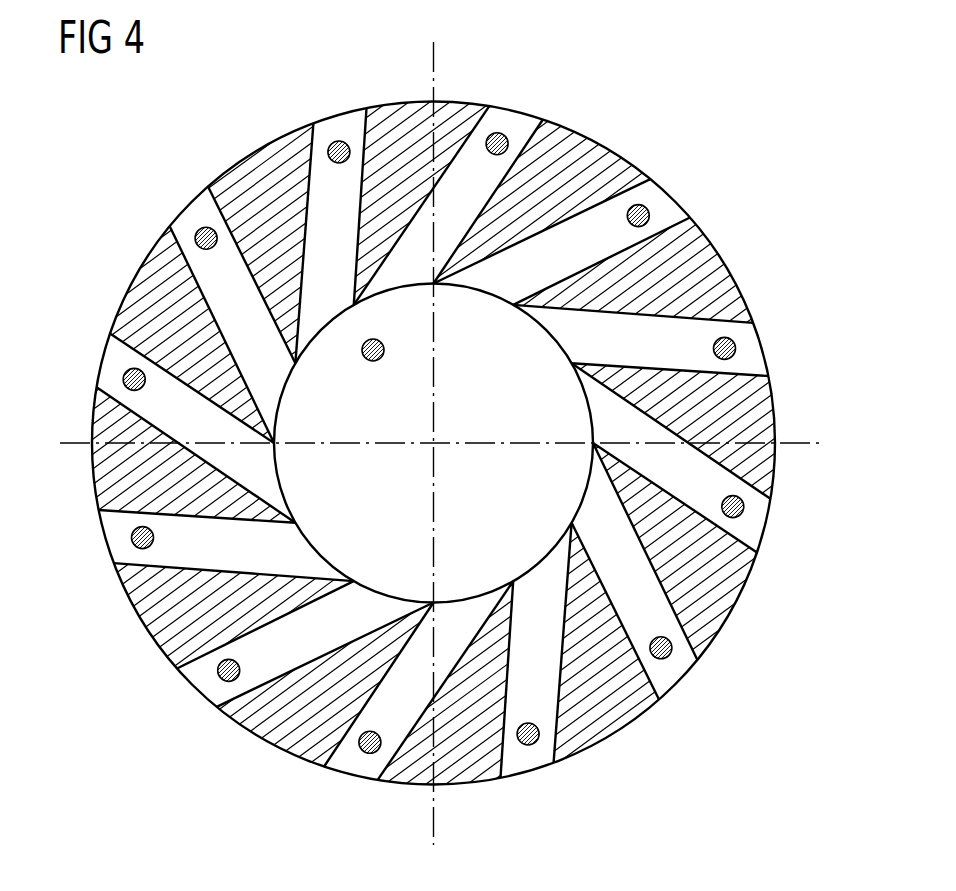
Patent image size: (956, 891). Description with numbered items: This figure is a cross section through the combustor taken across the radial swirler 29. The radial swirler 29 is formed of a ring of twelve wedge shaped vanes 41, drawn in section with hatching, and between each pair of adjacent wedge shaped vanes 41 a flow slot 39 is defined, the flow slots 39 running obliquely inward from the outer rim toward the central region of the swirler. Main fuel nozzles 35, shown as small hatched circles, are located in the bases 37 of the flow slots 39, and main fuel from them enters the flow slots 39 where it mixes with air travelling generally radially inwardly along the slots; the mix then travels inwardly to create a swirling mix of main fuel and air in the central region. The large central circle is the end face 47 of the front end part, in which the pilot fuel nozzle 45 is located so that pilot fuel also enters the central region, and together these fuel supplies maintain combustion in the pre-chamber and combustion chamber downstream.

The radial swirler 29 is at (533, 97).
The main fuel nozzles 35 is at (650, 212).
The bases 37 is at (347, 253).
The flow slots 39 is at (338, 128).
The wedge shaped vanes 41 is at (598, 160).
The pilot fuel nozzle 45 is at (368, 362).
The end face 47 is at (494, 491).